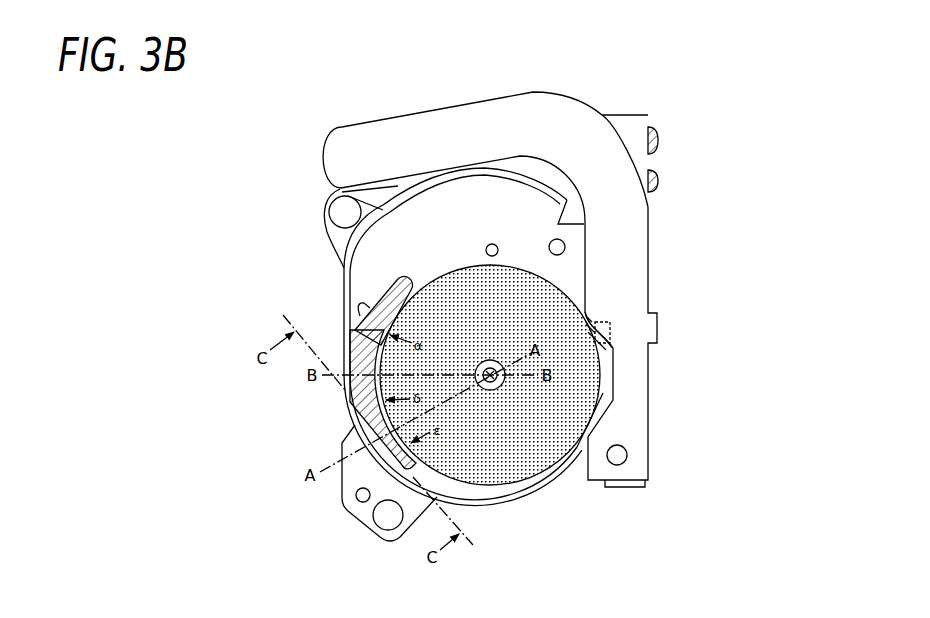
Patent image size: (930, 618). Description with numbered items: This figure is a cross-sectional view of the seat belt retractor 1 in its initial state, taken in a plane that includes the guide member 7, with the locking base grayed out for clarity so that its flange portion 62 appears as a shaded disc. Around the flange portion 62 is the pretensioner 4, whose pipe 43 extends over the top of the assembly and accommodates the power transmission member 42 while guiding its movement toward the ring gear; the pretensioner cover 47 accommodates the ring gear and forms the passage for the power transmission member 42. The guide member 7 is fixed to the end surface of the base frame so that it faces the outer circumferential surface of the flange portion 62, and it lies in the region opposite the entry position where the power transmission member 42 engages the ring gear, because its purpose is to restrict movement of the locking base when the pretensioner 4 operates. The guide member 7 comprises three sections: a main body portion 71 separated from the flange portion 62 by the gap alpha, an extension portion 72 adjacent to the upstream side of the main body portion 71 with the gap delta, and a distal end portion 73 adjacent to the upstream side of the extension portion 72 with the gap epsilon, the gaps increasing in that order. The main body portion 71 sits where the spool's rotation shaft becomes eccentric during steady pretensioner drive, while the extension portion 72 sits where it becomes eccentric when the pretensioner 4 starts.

The seat belt retractor 1 is at (719, 144).
The pretensioner 4 is at (296, 177).
The pipe 43 is at (425, 118).
The pretensioner cover 47 is at (348, 256).
The guide member 7 is at (359, 351).
The main body portion 71 is at (373, 321).
The extension portion 72 is at (350, 407).
The distal end portion 73 is at (382, 445).
The power transmission member 42 is at (594, 326).
The flange portion 62 is at (527, 433).